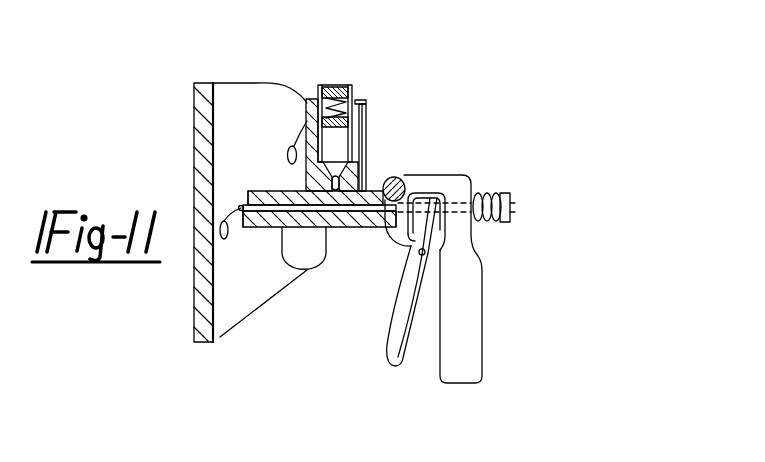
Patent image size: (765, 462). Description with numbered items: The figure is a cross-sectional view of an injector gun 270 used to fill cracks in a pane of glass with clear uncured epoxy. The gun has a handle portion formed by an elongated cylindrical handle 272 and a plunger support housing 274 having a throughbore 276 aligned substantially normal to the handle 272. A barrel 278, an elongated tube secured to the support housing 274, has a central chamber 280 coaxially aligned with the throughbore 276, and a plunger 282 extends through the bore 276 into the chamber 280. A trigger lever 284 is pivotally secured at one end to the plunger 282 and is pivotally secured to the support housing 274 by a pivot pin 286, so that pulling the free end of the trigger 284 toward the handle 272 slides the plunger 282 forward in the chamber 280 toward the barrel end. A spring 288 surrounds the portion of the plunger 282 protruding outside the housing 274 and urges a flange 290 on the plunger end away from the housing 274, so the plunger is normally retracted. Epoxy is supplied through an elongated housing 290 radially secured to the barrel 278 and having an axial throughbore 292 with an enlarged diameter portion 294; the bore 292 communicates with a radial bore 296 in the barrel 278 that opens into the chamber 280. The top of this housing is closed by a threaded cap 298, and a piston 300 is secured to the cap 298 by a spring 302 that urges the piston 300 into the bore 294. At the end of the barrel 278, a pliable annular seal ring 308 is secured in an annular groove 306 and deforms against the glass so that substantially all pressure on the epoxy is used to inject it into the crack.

The injector gun 270 is at (533, 343).
The elongated cylindrical handle 272 is at (482, 302).
The plunger support housing 274 is at (438, 177).
The throughbore 276 is at (448, 193).
The barrel 278 is at (263, 227).
The central chamber 280 is at (287, 282).
The plunger 282 is at (475, 248).
The trigger lever 284 is at (395, 303).
The pivot pin 286 is at (400, 370).
The spring 288 is at (470, 192).
The flange 290 is at (363, 102).
The axial throughbore 292 is at (362, 161).
The enlarged diameter portion 294 is at (364, 138).
The radial bore 296 is at (365, 178).
The threaded cap 298 is at (318, 89).
The piston 300 is at (307, 121).
The spring 302 is at (341, 86).
The annular groove 306 is at (225, 239).
The annular seal ring 308 is at (246, 191).